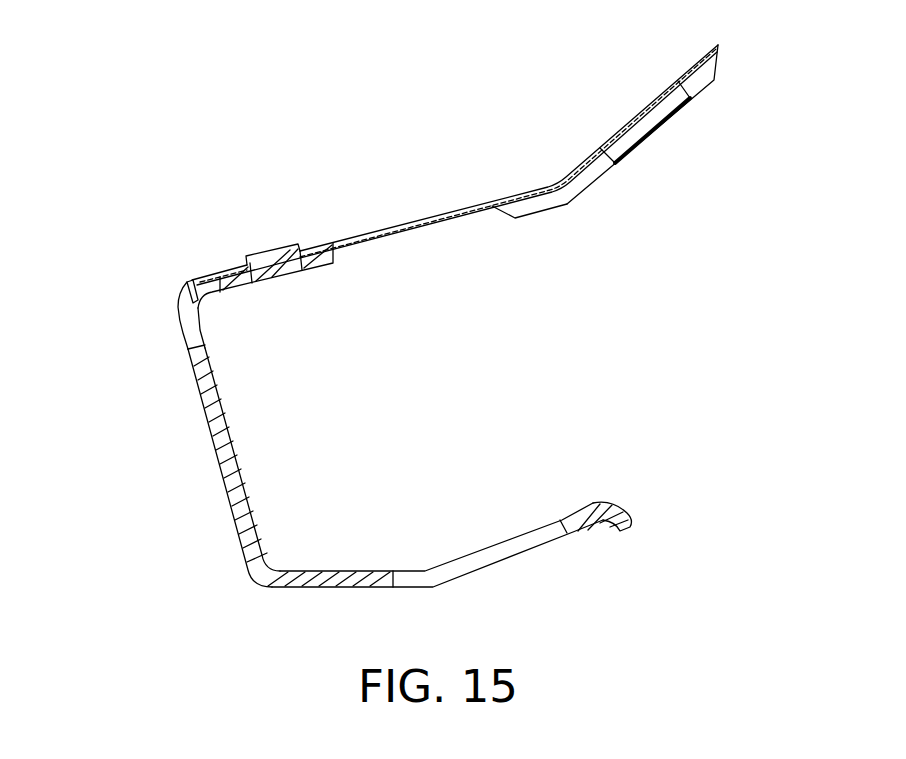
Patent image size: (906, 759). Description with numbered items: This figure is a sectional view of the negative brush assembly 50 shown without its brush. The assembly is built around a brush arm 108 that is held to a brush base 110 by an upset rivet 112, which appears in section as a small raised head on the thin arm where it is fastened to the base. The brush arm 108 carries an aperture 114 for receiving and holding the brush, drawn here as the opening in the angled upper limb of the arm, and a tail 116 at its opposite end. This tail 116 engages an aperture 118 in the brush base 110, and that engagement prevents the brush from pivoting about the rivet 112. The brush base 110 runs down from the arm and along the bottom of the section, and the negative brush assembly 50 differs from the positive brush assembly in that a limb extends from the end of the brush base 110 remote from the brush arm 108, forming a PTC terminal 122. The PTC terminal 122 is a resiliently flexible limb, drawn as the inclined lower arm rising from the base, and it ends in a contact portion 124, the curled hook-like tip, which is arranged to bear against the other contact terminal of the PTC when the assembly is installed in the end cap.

The negative brush assembly 50 is at (196, 100).
The brush arm 108 is at (392, 224).
The brush base 110 is at (237, 448).
The upset rivet 112 is at (278, 250).
The aperture 114 is at (650, 123).
The tail 116 is at (190, 280).
The aperture 118 is at (189, 327).
The PTC terminal 122 is at (435, 580).
The contact portion 124 is at (602, 505).